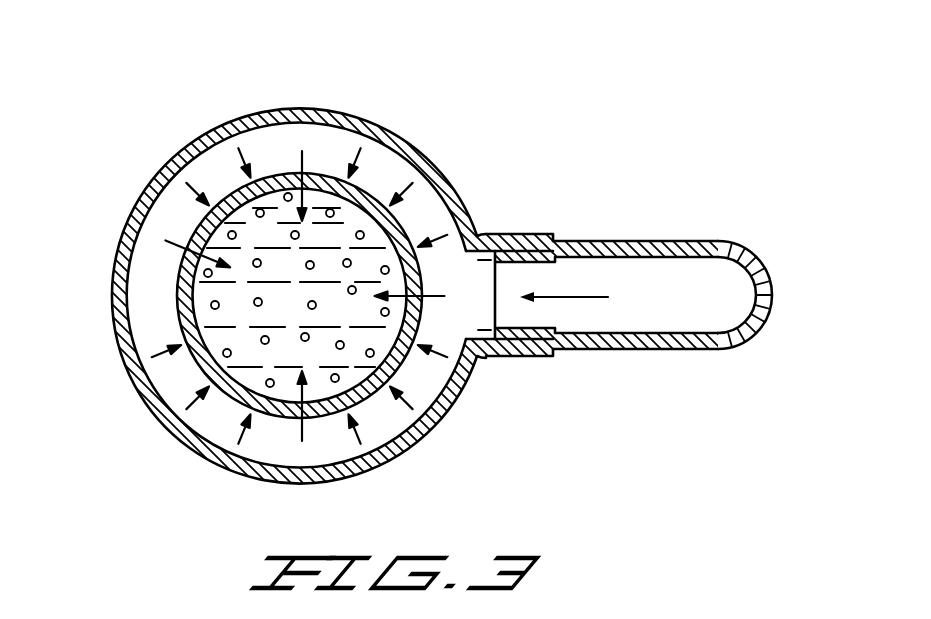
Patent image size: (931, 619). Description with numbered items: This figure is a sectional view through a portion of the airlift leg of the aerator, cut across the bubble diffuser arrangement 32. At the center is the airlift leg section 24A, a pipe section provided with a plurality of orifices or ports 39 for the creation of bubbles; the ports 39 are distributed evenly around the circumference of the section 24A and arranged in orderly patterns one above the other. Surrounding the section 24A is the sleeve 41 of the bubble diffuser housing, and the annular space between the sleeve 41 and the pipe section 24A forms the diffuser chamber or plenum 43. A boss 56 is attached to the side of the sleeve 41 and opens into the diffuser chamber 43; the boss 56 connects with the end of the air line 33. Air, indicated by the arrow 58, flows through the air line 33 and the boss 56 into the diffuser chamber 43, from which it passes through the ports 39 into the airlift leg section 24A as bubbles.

The diffuser assembly 32 is at (476, 242).
The sleeve 41 is at (433, 165).
The diffuser chamber 43 is at (212, 172).
The boss 56 is at (524, 234).
The air flow arrow 58 is at (580, 293).
The air line 33 is at (758, 338).
The ports 39 is at (387, 382).
The airlift leg section 24A is at (190, 358).